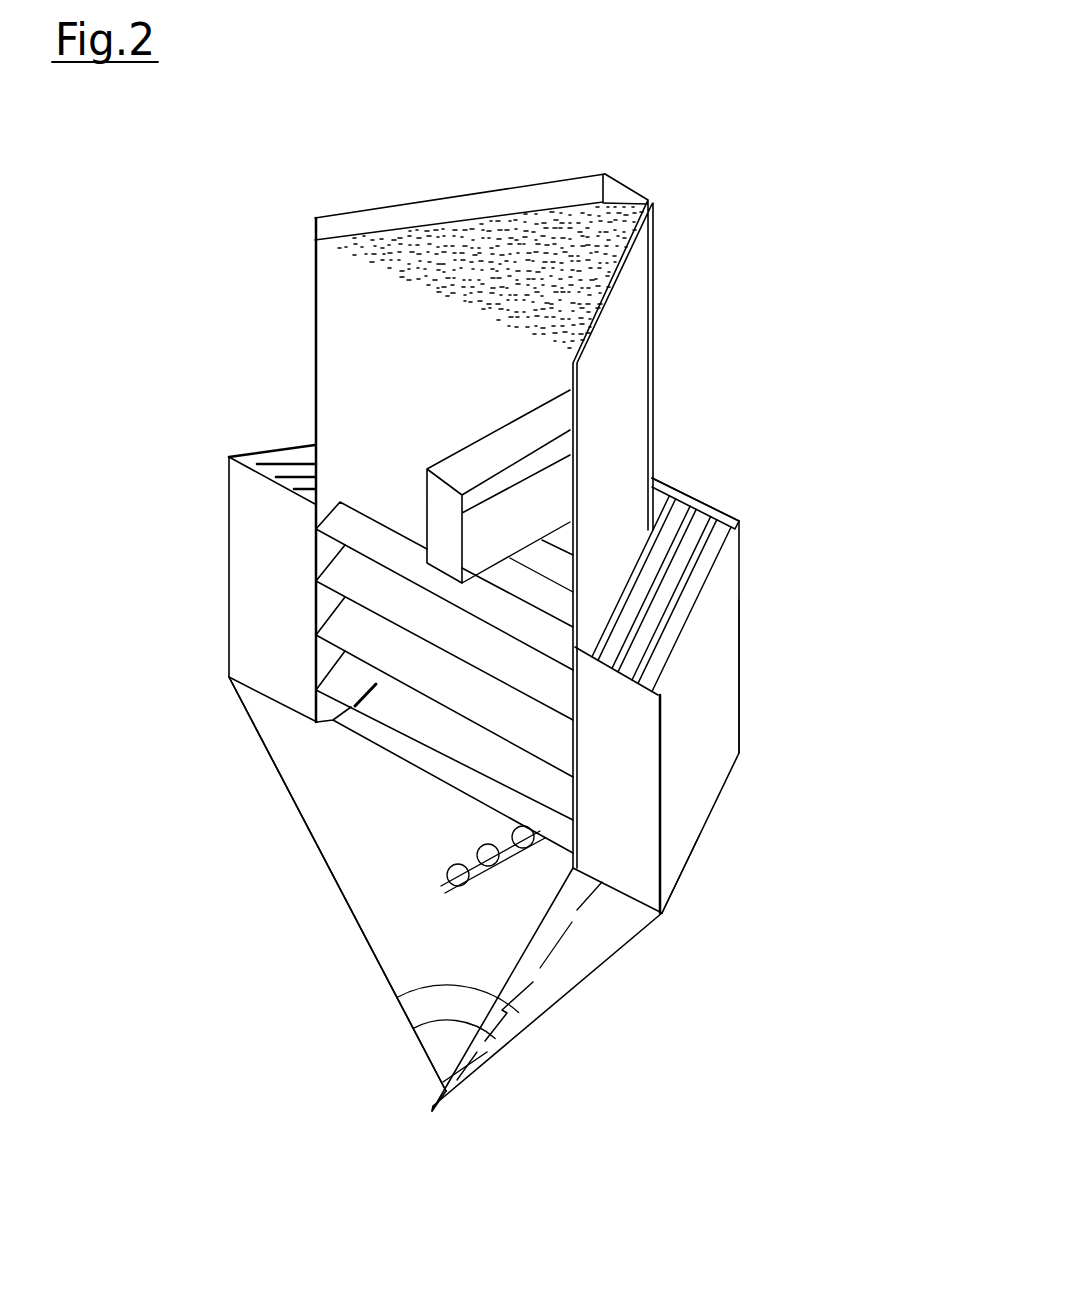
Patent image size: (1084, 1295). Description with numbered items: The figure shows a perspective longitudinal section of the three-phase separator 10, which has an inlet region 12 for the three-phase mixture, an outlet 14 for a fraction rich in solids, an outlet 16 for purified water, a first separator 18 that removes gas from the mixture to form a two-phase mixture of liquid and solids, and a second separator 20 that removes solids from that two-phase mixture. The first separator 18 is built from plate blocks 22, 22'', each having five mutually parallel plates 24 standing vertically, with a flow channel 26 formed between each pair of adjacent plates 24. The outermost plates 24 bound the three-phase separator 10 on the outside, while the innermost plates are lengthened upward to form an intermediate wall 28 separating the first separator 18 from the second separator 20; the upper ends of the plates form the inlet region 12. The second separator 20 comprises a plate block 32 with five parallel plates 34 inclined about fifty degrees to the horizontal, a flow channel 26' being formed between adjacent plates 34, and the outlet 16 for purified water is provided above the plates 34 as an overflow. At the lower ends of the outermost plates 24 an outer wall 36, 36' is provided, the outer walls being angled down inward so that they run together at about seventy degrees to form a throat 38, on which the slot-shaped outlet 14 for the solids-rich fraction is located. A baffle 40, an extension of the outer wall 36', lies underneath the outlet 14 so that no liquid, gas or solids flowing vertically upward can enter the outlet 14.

The three-phase separator 10 is at (827, 617).
The inlet region 12 is at (713, 497).
The outlet for a fraction rich in solids 14 is at (437, 1001).
The outlet for purified water 16 is at (465, 472).
The first separator 18 is at (740, 682).
The second separator 20 is at (357, 732).
The plate block 22 is at (764, 756).
The plate block 22'' is at (193, 545).
The plates 24 is at (700, 583).
The flow channel 26 is at (722, 456).
The flow channel 26' is at (350, 661).
The intermediate wall 28 is at (638, 365).
The plate block 32 is at (345, 578).
The plates 34 is at (440, 733).
The outer wall 36 is at (603, 989).
The outer wall 36' is at (372, 884).
The throat 38 is at (568, 997).
The baffle 40 is at (447, 1092).